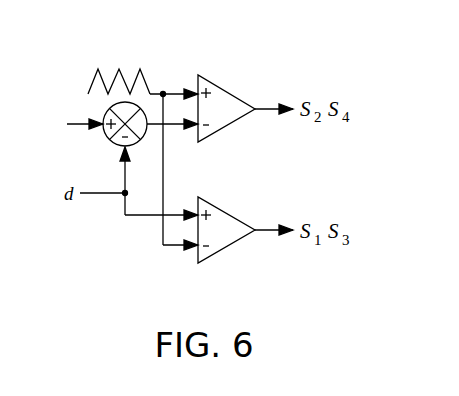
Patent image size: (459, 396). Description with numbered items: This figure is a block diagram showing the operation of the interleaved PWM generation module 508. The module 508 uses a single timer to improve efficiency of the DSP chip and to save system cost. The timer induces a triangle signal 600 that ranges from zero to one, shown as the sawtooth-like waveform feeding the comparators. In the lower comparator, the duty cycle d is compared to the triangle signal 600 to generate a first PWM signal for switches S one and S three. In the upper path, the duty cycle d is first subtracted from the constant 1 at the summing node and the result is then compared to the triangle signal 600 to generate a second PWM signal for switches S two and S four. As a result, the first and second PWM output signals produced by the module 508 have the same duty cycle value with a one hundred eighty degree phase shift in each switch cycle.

The triangle signal 600 is at (95, 75).
The interleaved PWM generation module 508 is at (213, 42).
The constant input value 1 is at (77, 124).